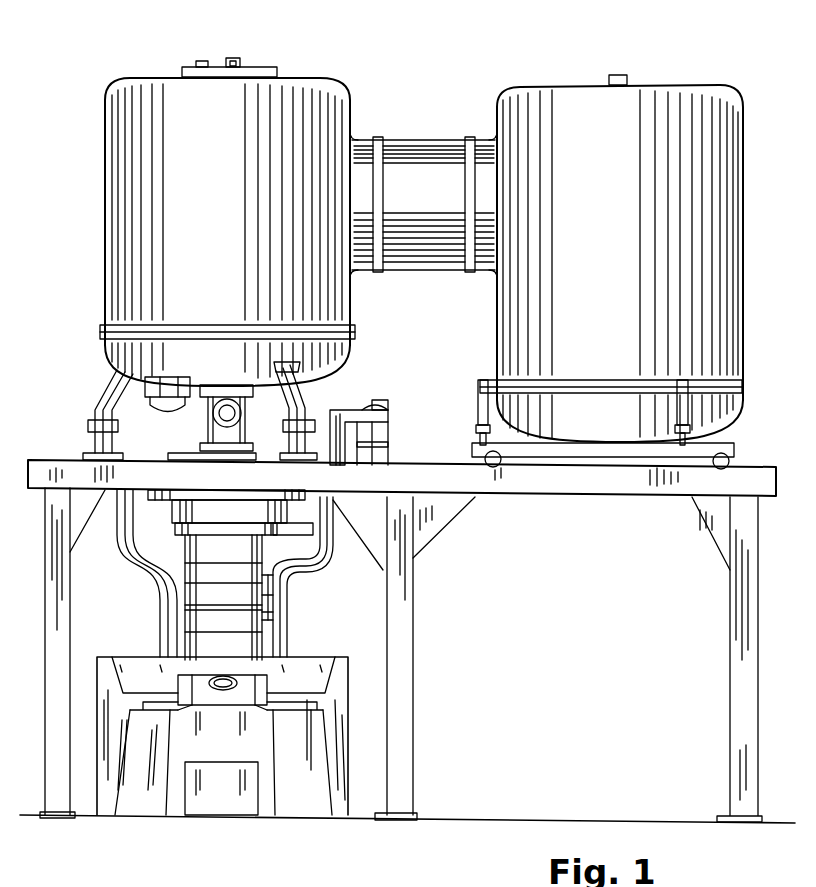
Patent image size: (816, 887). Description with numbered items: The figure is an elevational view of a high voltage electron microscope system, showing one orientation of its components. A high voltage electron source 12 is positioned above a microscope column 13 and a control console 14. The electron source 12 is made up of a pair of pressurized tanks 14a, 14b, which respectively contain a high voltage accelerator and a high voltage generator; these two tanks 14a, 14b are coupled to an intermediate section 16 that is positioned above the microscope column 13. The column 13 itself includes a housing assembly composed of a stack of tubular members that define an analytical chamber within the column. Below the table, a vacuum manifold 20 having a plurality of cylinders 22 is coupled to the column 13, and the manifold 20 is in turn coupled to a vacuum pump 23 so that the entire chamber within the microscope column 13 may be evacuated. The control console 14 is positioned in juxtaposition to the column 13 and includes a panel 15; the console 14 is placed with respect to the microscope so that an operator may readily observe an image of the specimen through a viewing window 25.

The high voltage electron source 12 is at (430, 90).
The microscope column 13 is at (265, 636).
The control console 14 is at (313, 738).
The pressurized tank 14a is at (312, 75).
The pressurized tank 14b is at (672, 85).
The panel 15 is at (317, 705).
The intermediate section 16 is at (250, 408).
The vacuum manifold 20 is at (325, 568).
The cylinders 22 is at (333, 560).
The vacuum pump 23 is at (365, 410).
The viewing window 25 is at (217, 678).